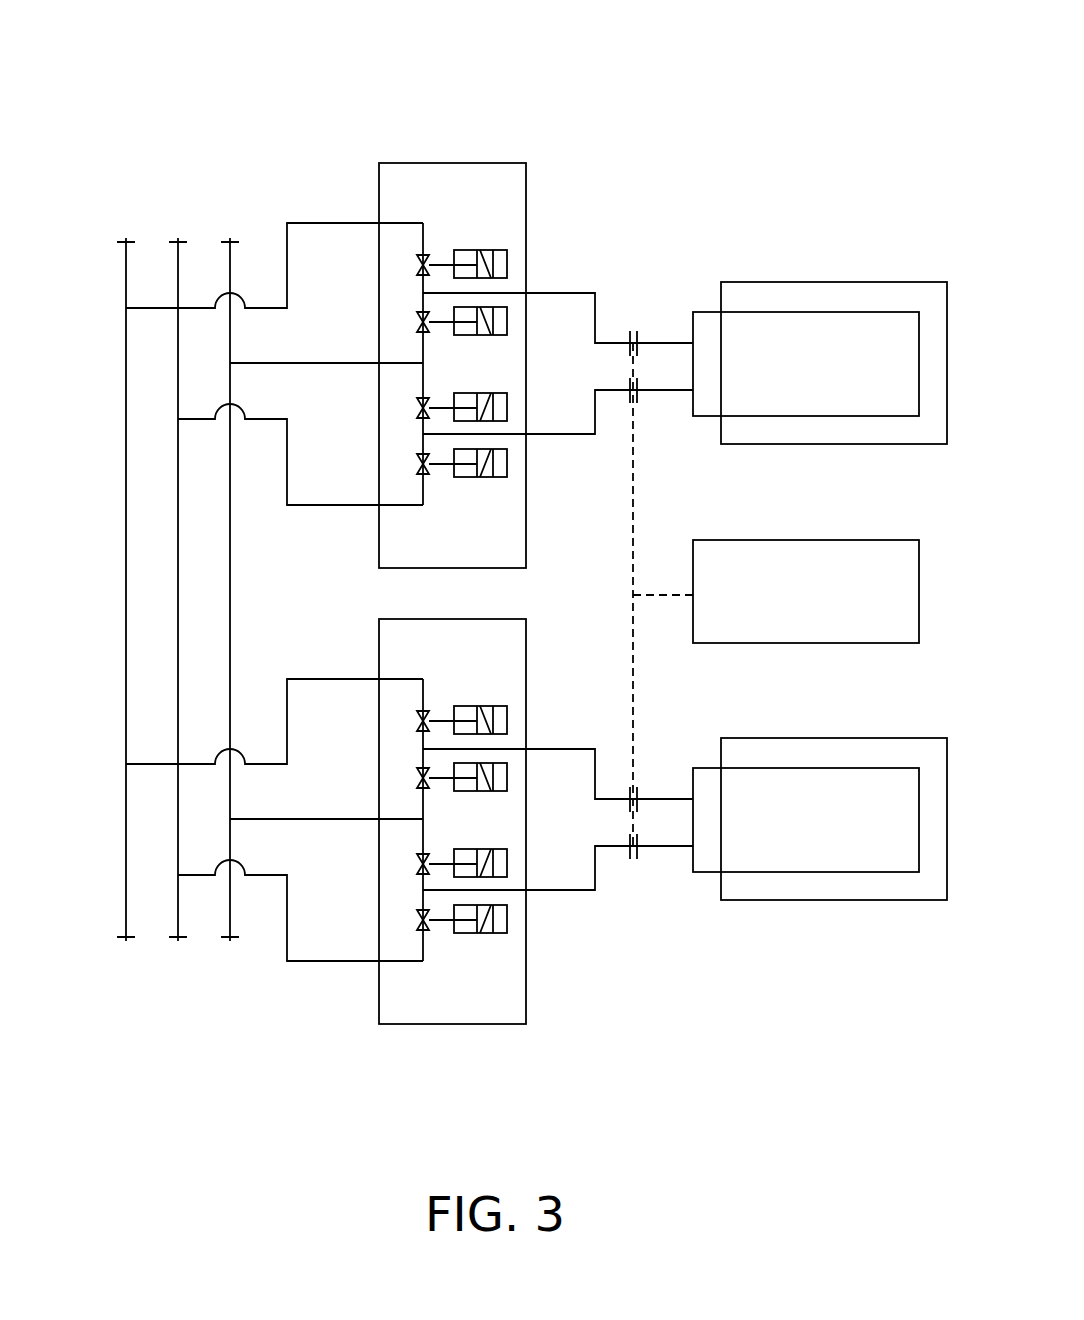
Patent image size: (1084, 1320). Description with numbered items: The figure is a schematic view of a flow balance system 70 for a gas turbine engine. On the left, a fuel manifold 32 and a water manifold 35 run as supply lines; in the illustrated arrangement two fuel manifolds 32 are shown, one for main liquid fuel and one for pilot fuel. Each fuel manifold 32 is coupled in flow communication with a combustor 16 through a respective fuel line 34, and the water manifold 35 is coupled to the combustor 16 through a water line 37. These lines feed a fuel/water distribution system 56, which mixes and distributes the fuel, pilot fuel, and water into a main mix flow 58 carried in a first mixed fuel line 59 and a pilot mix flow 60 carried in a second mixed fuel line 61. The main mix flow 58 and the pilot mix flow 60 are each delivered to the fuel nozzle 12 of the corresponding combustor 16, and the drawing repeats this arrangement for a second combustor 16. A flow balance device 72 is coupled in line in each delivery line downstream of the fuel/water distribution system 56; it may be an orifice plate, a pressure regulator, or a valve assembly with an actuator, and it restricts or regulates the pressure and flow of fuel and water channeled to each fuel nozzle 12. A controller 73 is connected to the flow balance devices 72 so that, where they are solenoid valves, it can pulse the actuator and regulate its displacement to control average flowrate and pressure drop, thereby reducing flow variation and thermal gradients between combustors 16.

The flow balance system 70 is at (865, 82).
The fuel manifold 32 is at (126, 277).
The water manifold 35 is at (177, 262).
The fuel line 34 is at (150, 308).
The water line 37 is at (265, 420).
The fuel/water distribution system 56 is at (527, 181).
The first mixed fuel line 59 is at (547, 293).
The main mix flow 58 is at (578, 293).
The second mixed fuel line 61 is at (541, 437).
The pilot mix flow 60 is at (580, 437).
The flow balance device 72 is at (637, 331).
The combustor 16 is at (897, 282).
The fuel nozzle 12 is at (793, 400).
The controller 73 is at (793, 628).